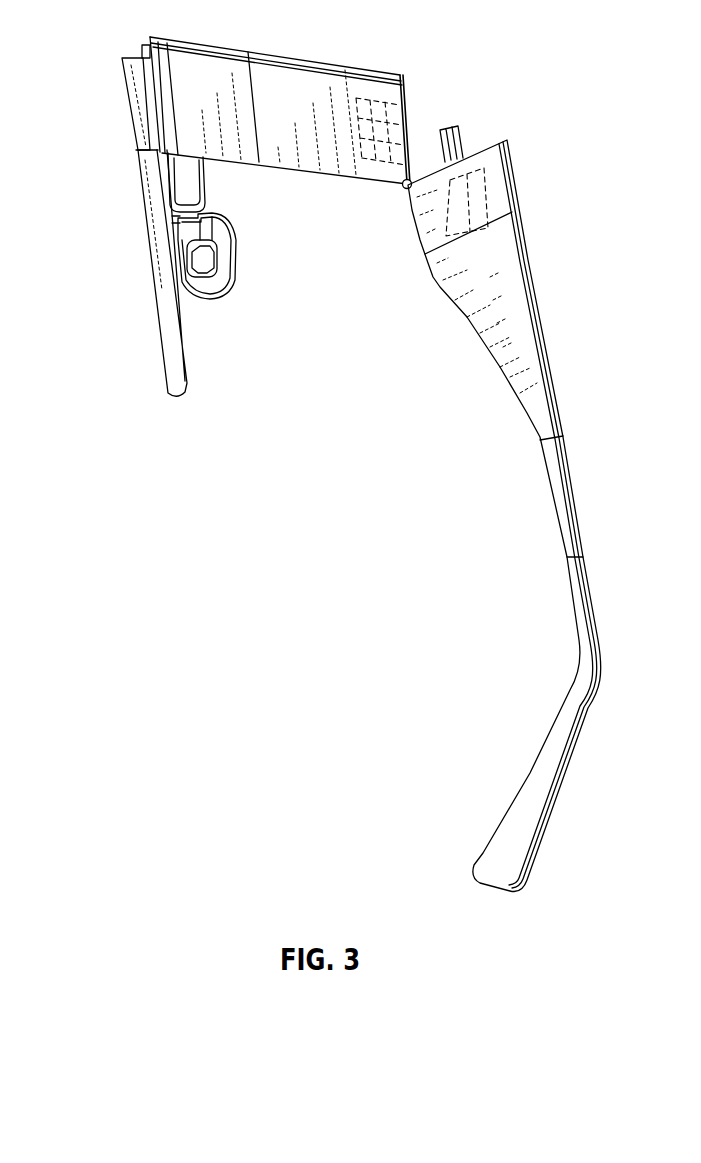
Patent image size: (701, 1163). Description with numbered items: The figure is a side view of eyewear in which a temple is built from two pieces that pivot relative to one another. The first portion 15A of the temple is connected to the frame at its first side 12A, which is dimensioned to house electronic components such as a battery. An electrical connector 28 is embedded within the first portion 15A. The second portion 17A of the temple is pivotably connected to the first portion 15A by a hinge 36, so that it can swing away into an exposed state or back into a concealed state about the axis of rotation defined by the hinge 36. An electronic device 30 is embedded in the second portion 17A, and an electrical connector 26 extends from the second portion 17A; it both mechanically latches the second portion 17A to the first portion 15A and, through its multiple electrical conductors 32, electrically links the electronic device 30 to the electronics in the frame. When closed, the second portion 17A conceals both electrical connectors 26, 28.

The first side 12A is at (143, 263).
The first portion 15A is at (457, 71).
The second portion 17A is at (526, 217).
The electrical connector 26 is at (460, 130).
The electrical connector 28 is at (367, 100).
The electronic device 30 is at (483, 192).
The electrical conductors 32 is at (465, 152).
The hinge 36 is at (401, 188).